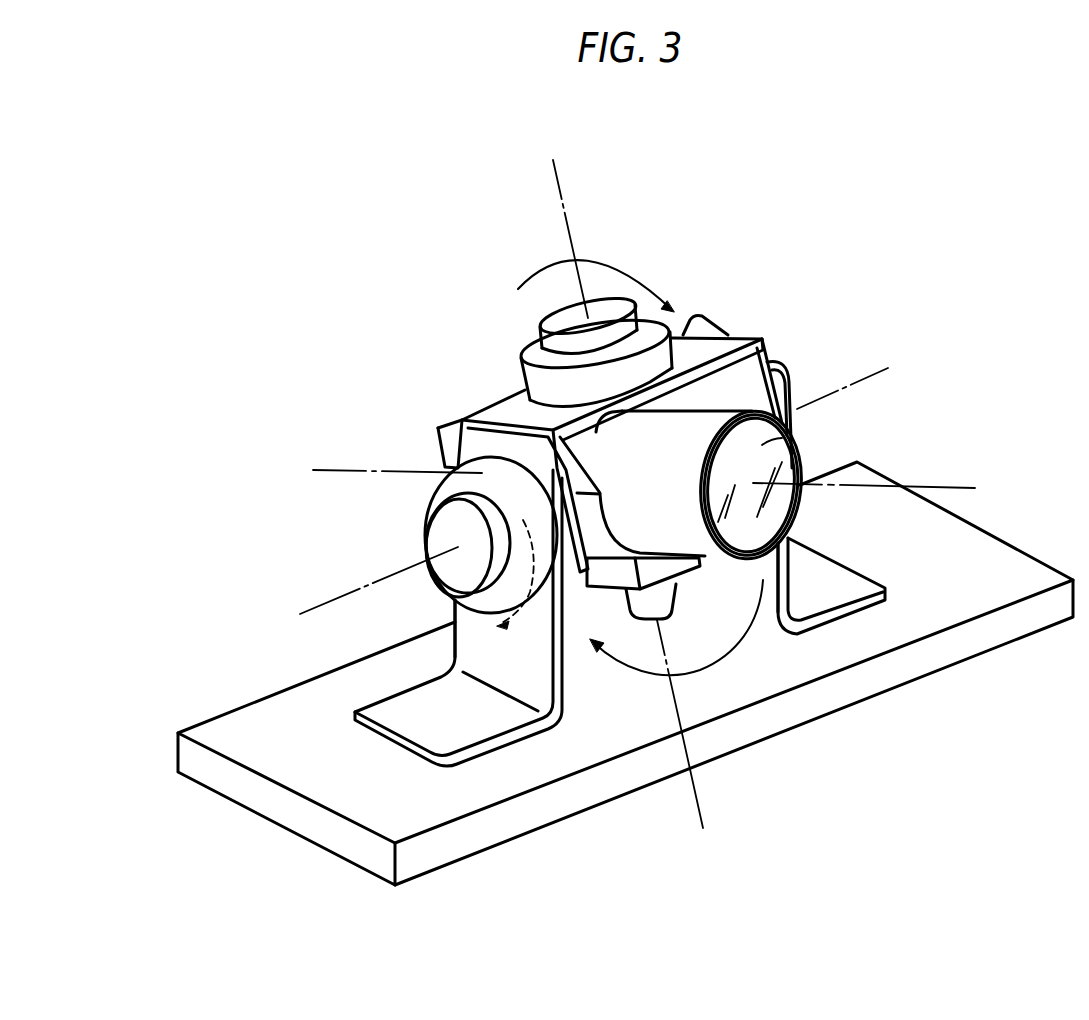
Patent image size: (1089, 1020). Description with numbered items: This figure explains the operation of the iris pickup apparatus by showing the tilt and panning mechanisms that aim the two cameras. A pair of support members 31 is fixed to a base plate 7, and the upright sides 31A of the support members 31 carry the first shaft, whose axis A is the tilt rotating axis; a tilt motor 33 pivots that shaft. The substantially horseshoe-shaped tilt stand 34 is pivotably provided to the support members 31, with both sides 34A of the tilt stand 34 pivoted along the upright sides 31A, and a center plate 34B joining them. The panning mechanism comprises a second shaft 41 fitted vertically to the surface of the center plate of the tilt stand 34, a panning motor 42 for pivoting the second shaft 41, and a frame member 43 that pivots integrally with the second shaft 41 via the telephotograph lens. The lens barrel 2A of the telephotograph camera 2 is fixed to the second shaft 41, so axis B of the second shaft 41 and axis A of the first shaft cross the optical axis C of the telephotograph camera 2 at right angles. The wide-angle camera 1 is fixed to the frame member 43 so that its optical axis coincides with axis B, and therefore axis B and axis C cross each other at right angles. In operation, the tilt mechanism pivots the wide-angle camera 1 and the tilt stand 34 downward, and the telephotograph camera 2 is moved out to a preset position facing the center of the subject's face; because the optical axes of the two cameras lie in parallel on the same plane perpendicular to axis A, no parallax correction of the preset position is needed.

The wide-angle camera 1 is at (634, 606).
The telephotograph camera 2 is at (760, 445).
The lens barrel 2A is at (712, 410).
The base plate 7 is at (1028, 570).
The support members 31 is at (484, 728).
The upright sides 31A is at (477, 643).
The tilt motor 33 is at (437, 540).
The tilt stand 34 is at (617, 429).
The sides of the tilt stand 34A is at (447, 450).
The top plate of frame 34B is at (717, 350).
The second shaft 41 is at (518, 397).
The panning motor 42 is at (557, 318).
The frame member 43 is at (680, 580).
The axis of the first shaft A is at (593, 492).
The axis of the second shaft B is at (613, 496).
The optical axis of the telephotograph camera lens C is at (644, 481).